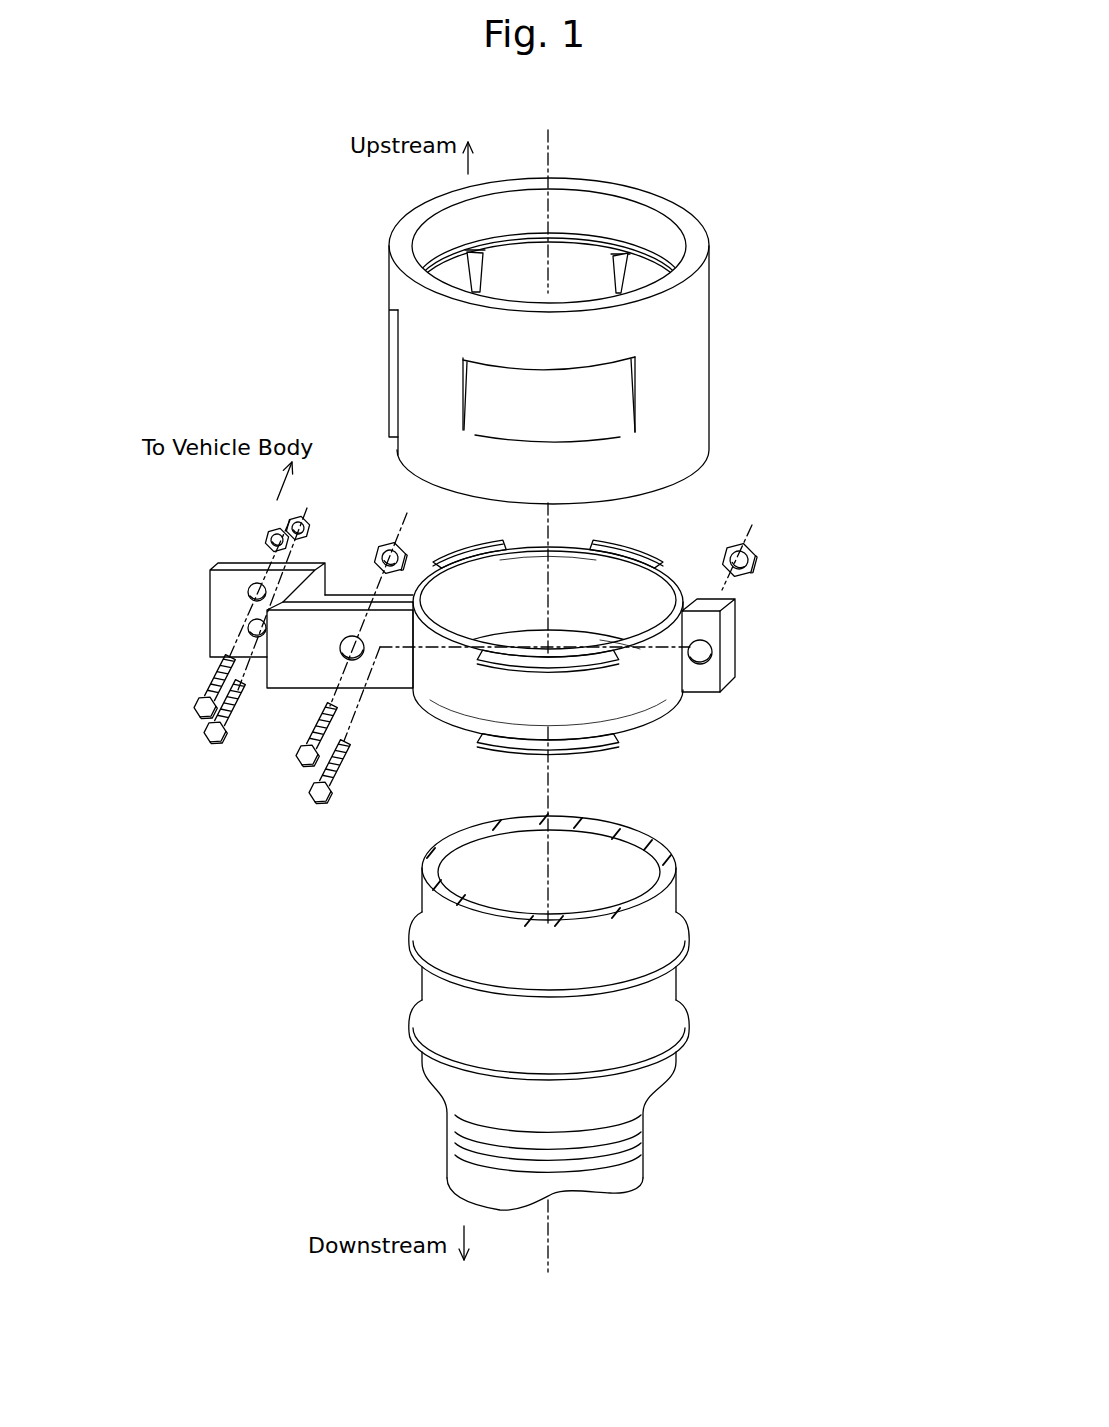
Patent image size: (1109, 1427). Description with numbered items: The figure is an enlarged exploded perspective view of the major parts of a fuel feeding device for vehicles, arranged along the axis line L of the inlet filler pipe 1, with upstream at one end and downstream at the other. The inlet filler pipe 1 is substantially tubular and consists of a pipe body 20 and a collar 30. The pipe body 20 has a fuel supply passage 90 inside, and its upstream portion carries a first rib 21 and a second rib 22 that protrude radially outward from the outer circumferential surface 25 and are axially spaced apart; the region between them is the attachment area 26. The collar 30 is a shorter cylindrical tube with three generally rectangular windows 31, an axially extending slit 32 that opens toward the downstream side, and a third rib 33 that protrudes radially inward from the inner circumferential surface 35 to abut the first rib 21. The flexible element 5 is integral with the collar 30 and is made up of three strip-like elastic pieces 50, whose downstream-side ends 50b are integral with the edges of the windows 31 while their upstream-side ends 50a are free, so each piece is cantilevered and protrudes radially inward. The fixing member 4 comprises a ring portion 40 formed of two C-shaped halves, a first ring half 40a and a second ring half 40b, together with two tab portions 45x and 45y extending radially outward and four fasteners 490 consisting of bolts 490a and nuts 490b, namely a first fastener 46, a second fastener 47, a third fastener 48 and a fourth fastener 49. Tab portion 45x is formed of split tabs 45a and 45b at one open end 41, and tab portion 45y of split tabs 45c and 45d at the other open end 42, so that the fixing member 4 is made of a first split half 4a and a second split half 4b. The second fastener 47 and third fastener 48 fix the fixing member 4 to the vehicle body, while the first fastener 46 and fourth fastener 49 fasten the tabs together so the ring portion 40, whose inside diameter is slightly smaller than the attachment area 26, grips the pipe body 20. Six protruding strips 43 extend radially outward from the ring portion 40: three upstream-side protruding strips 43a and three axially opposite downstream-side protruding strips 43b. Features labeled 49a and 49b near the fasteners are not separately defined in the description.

The inlet filler pipe 1 is at (826, 764).
The fixing member 4 is at (397, 694).
The first split half 4a is at (618, 729).
The second split half 4b is at (537, 545).
The flexible element 5 is at (807, 311).
The pipe body 20 is at (668, 908).
The first rib 21 is at (682, 951).
The second rib 22 is at (680, 1023).
The outer circumferential surface 25 is at (462, 1029).
The attachment area 26 is at (594, 1019).
The collar 30 is at (699, 452).
The windows 31 is at (627, 249).
The slit 32 is at (395, 363).
The third rib 33 is at (580, 236).
The inner circumferential surface 35 is at (476, 219).
The ring portion 40 is at (678, 538).
The first ring half 40a is at (620, 640).
The second ring half 40b is at (573, 565).
The open end 41 is at (428, 605).
The open end 42 is at (665, 604).
The protruding strips 43 is at (501, 658).
The upstream-side protruding strips 43a is at (477, 542).
The downstream-side protruding strips 43b is at (496, 753).
The split tab 45a is at (388, 508).
The split tab 45b is at (349, 596).
The split tab 45c is at (700, 680).
The split tab 45d is at (733, 653).
The tab portion 45x is at (369, 609).
The tab portion 45y is at (737, 757).
The first fastener 46 is at (304, 762).
The second fastener 47 is at (215, 737).
The third fastener 48 is at (202, 714).
The fourth fastener 49 is at (319, 799).
The bolt holes 49a is at (212, 675).
The nuts 49b is at (266, 542).
The elastic pieces 50 is at (632, 278).
The upstream-side ends 50a is at (530, 373).
The downstream-side ends 50b is at (583, 437).
The fuel supply passage 90 is at (485, 890).
The fasteners 490 is at (268, 858).
The bolts 490a is at (192, 695).
The nuts 490b is at (252, 533).
The axis line L is at (549, 140).